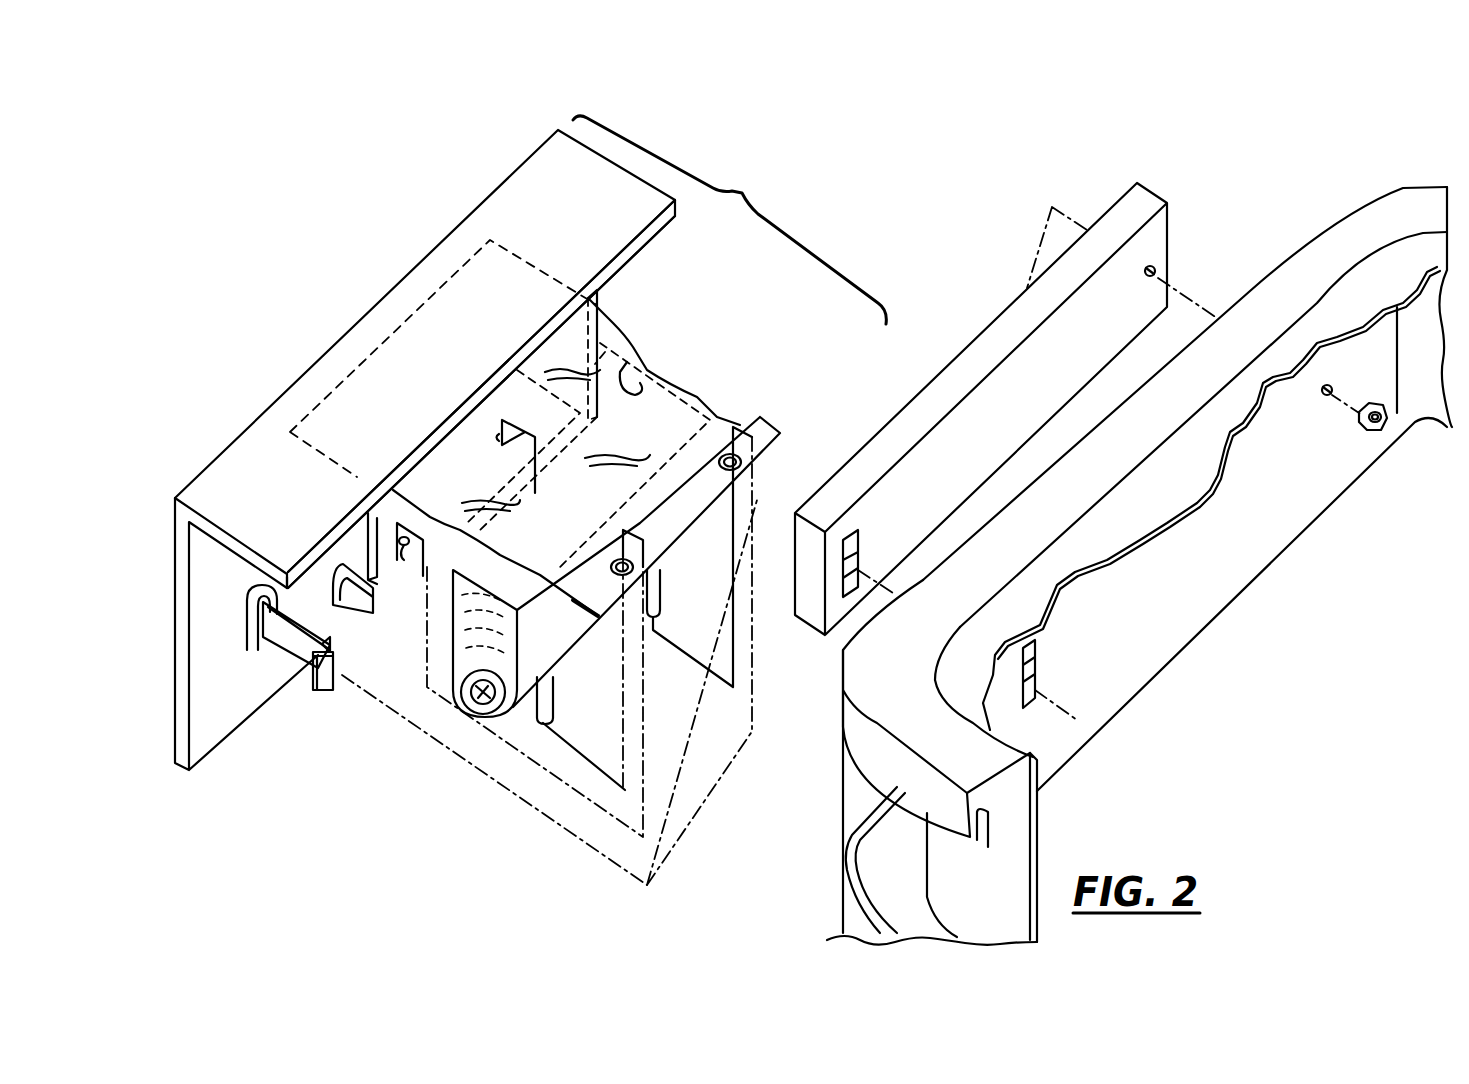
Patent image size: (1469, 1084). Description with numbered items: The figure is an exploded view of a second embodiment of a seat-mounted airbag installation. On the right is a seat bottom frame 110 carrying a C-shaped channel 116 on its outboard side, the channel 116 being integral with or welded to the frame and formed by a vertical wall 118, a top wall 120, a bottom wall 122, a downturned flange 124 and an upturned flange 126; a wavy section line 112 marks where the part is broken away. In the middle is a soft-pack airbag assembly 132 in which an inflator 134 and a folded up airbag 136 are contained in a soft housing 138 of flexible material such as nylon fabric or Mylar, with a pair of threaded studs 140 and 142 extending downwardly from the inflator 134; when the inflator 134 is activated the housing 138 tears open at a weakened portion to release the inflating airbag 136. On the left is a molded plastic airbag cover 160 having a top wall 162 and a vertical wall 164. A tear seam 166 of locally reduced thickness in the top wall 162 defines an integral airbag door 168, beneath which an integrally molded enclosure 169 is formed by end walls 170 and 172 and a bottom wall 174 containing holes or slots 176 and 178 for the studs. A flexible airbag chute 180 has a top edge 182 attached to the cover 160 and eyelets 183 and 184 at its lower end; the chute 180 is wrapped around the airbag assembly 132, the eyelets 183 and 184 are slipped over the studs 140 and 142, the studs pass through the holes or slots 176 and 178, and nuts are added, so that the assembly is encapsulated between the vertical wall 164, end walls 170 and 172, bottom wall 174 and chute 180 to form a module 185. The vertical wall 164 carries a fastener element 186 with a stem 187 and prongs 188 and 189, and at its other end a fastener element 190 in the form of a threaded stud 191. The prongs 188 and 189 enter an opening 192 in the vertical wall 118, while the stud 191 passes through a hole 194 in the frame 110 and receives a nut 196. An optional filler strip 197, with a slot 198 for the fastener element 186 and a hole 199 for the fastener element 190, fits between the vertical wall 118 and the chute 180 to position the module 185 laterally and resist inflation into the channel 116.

The seat bottom frame 110 is at (1335, 238).
The wavy seam/flange 112 is at (1168, 503).
The C-shaped channel 116 is at (1292, 267).
The vertical wall 118 is at (1067, 683).
The top wall 120 is at (873, 703).
The bottom wall 122 is at (883, 873).
The downturned flange 124 is at (988, 822).
The upturned flange 126 is at (843, 860).
The airbag assembly 132 is at (727, 366).
The inflator 134 is at (487, 705).
The folded up airbag 136 is at (513, 623).
The soft housing 138 is at (713, 433).
The threaded stud 140 is at (556, 712).
The threaded stud 142 is at (661, 600).
The airbag cover 160 is at (474, 172).
The top wall 162 is at (257, 447).
The vertical wall 164 is at (173, 553).
The tear seam 166 is at (440, 270).
The airbag door 168 is at (378, 350).
The enclosure 169 is at (310, 583).
The end wall 170 is at (362, 537).
The end wall 172 is at (596, 303).
The bottom wall 174 is at (395, 592).
The hole or slot 176 is at (403, 546).
The hole or slot 178 is at (512, 436).
The airbag chute 180 is at (556, 350).
The top edge 182 is at (457, 441).
The eyelet 183 is at (715, 466).
The eyelet 184 is at (613, 565).
The module 185 is at (729, 220).
The fastener element 186 is at (277, 637).
The stem 187 is at (300, 653).
The prong 188 is at (322, 691).
The prong 189 is at (340, 665).
The fastener element 190 is at (621, 360).
The threaded stud 191 is at (649, 385).
The opening 192 is at (1035, 666).
The hole 194 is at (1331, 386).
The nut 196 is at (1360, 428).
The filler strip 197 is at (1108, 230).
The slot 198 is at (853, 557).
The hole 199 is at (1156, 272).